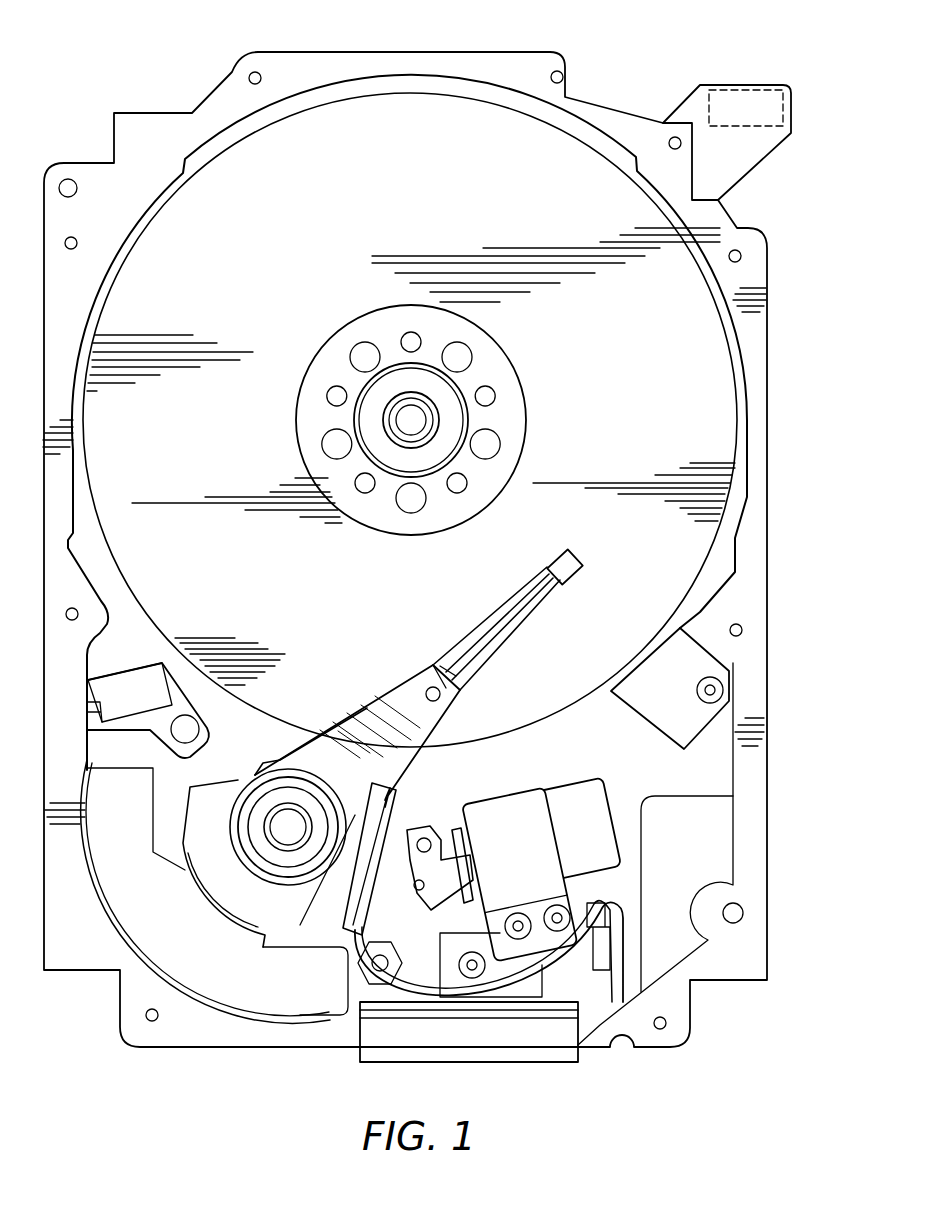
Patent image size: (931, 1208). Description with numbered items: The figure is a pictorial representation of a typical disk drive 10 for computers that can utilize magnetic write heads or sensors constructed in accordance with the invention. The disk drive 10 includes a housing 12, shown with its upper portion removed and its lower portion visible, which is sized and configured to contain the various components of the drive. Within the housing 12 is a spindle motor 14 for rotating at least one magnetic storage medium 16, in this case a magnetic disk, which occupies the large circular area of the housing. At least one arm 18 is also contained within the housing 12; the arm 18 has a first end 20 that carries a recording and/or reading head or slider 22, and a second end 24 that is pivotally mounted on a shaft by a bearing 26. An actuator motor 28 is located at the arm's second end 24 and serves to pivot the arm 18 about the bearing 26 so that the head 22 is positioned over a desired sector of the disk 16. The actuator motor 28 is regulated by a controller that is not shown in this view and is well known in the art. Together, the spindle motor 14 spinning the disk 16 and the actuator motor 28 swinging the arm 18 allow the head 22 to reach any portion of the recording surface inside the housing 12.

The disk drive 10 is at (90, 100).
The housing 12 is at (538, 62).
The spindle motor 14 is at (404, 423).
The magnetic storage medium 16 is at (330, 223).
The arm 18 is at (399, 707).
The first end 20 is at (511, 598).
The head 22 is at (566, 563).
The second end 24 is at (312, 768).
The bearing 26 is at (280, 815).
The actuator motor 28 is at (190, 942).